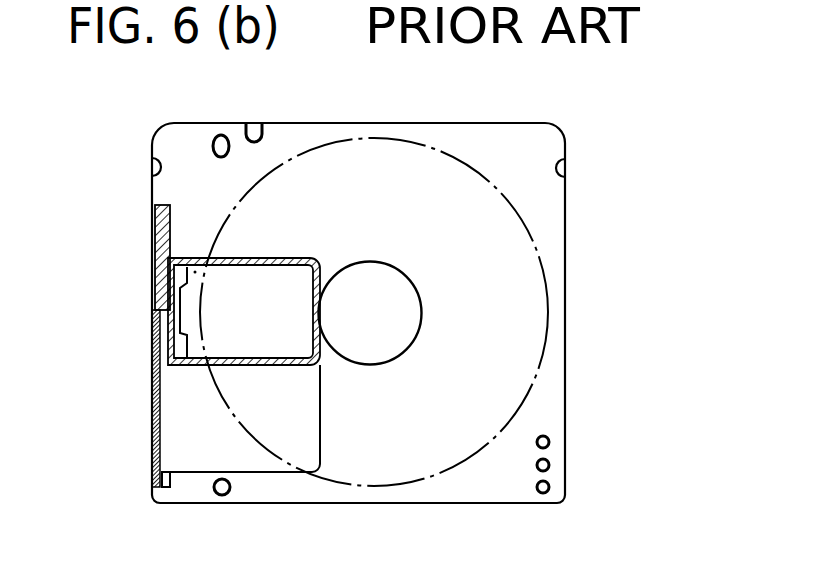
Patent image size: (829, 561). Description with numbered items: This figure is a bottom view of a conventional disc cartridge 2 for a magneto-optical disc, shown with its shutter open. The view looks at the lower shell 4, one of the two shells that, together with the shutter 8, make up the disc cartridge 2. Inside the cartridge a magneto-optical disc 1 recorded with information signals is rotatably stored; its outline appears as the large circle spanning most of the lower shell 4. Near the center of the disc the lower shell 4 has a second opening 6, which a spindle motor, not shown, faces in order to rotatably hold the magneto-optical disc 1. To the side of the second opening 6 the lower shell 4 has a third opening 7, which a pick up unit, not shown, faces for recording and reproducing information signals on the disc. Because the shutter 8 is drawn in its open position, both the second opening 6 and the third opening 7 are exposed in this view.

The magneto-optical disc 1 is at (540, 263).
The disc cartridge 2 is at (565, 148).
The lower shell 4 is at (530, 138).
The second opening 6 is at (395, 312).
The third opening 7 is at (178, 279).
The shutter 8 is at (176, 398).